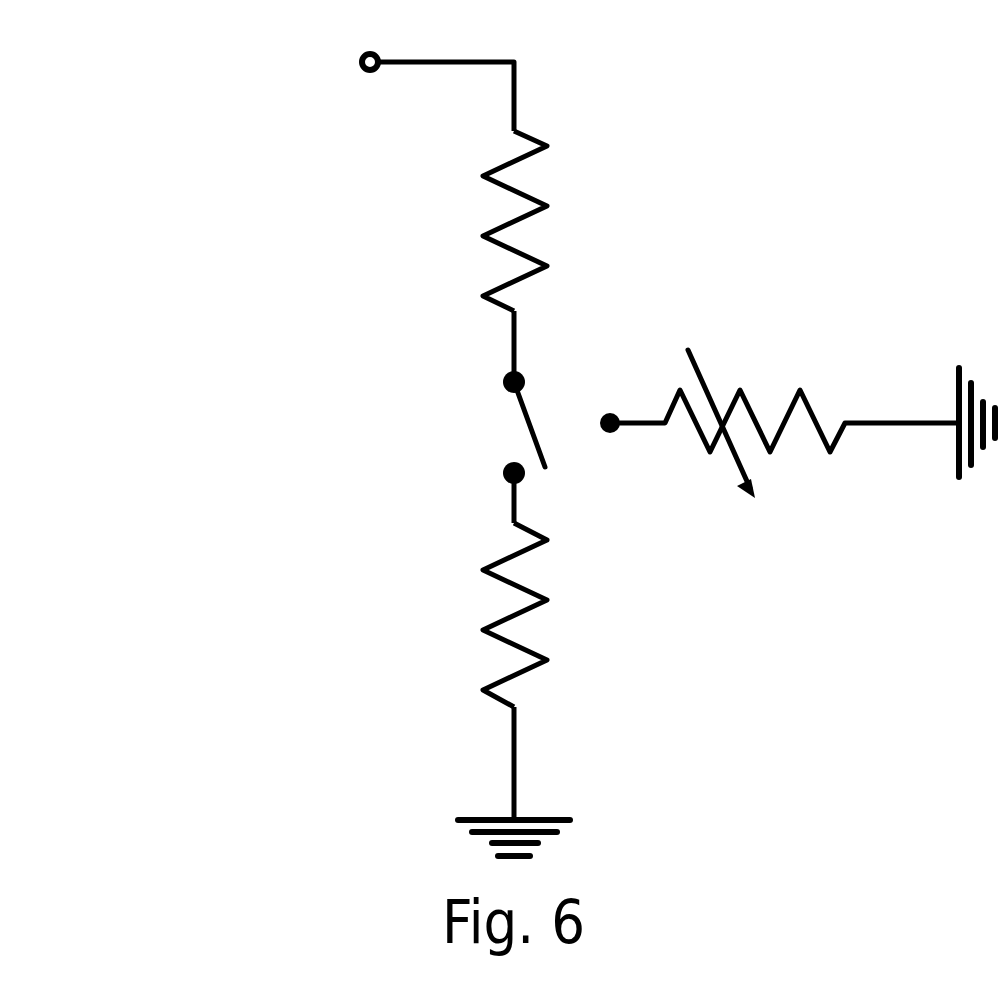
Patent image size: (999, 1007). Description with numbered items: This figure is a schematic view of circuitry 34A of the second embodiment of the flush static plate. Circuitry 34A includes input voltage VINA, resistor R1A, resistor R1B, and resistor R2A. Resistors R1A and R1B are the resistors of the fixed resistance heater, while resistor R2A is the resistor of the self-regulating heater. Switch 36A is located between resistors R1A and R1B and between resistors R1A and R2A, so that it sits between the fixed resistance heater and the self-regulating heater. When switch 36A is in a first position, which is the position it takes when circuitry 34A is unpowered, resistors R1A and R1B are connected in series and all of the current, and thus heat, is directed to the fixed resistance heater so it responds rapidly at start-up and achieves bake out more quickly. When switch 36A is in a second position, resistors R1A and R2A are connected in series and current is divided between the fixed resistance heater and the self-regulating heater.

The circuitry 34A is at (518, 446).
The switch 36A is at (525, 422).
The resistor R1A is at (504, 227).
The resistor R1B is at (498, 562).
The resistor R2A is at (738, 392).
The input voltage VINA is at (328, 60).